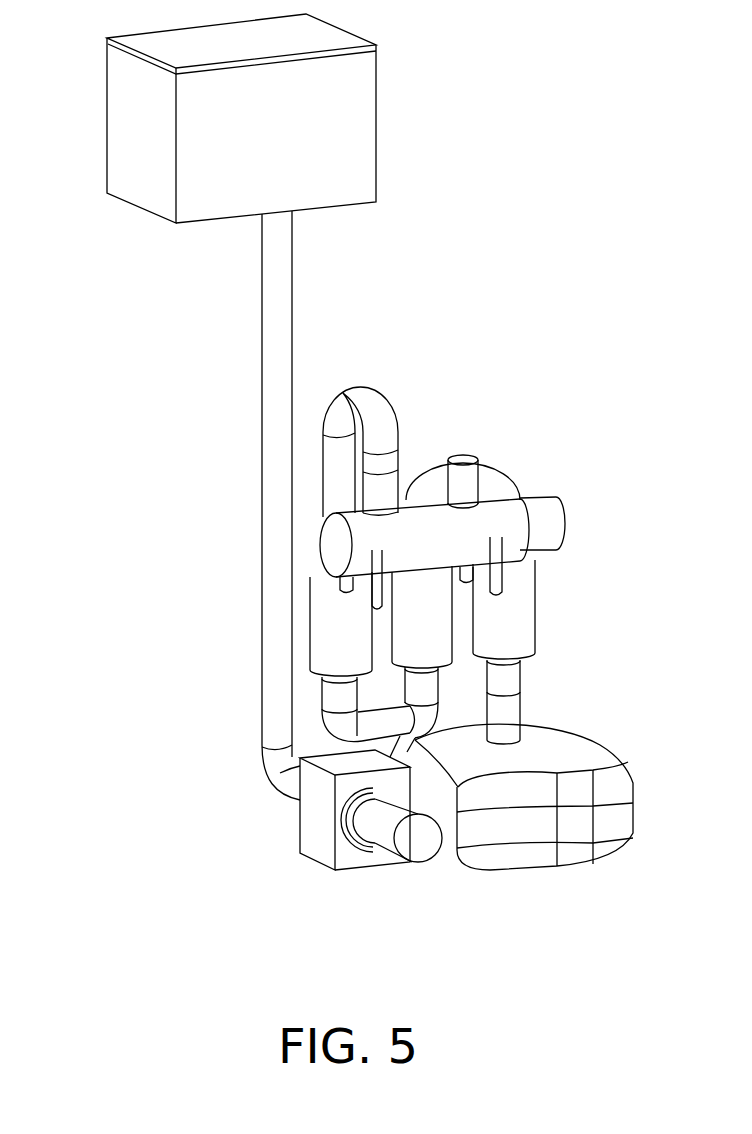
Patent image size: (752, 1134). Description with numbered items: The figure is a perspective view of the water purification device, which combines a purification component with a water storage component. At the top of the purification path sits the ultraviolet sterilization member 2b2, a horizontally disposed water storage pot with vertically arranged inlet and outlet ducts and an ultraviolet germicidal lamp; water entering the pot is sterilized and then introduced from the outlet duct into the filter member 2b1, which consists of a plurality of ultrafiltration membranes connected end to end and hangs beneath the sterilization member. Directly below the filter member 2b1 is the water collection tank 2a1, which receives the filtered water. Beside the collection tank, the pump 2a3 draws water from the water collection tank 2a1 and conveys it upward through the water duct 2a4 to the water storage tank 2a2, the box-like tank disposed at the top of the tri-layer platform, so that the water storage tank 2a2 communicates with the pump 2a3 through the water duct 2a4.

The water storage tank 2a2 is at (234, 192).
The water duct 2a4 is at (275, 408).
The ultraviolet sterilization member 2b2 is at (452, 533).
The filter member 2b1 is at (497, 623).
The water collection tank 2a1 is at (507, 760).
The pump 2a3 is at (320, 817).